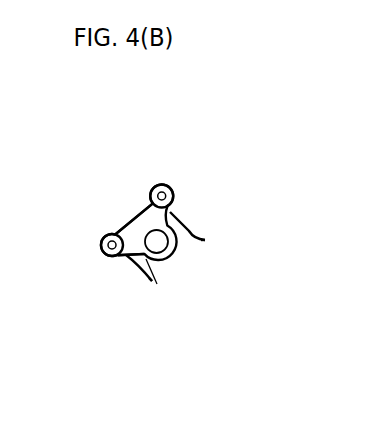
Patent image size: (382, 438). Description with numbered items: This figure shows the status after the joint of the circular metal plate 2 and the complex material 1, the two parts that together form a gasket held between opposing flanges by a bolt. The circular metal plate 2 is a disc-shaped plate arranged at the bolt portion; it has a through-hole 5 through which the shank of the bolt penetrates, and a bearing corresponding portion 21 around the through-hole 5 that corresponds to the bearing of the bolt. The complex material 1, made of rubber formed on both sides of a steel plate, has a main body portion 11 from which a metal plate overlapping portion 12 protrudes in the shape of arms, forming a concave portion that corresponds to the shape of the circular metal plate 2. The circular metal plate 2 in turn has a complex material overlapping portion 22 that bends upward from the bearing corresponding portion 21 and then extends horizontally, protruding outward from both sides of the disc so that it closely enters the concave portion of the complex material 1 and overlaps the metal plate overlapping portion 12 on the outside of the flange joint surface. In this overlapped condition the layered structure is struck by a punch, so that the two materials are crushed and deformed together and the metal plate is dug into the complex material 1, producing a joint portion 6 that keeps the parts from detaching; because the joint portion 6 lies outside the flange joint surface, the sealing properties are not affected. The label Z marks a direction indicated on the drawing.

The complex material 1 is at (217, 243).
The circular metal plate 2 is at (140, 204).
The through-hole 5 is at (135, 260).
The joint portion 6 is at (162, 184).
The main body portion 11 is at (151, 286).
The metal plate overlapping portion 12 is at (181, 221).
The bearing corresponding portion 21 is at (126, 228).
The complex material overlapping portion 22 is at (177, 189).
The direction Z is at (118, 207).